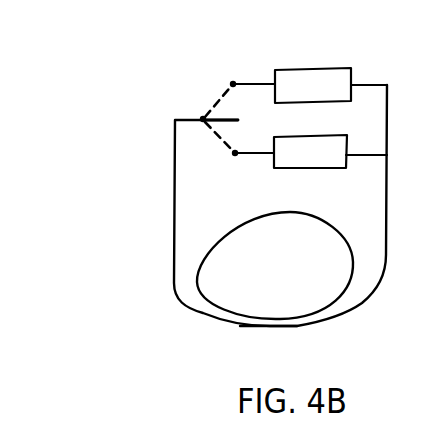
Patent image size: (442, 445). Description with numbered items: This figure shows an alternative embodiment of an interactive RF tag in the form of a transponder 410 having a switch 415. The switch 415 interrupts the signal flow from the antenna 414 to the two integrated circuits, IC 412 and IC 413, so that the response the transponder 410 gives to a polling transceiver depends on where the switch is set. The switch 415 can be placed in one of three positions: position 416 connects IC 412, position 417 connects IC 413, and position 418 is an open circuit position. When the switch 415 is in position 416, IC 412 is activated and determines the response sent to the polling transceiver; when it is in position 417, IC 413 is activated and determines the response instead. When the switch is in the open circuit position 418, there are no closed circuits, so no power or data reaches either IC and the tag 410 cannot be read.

The transponder 410 is at (136, 196).
The IC 412 is at (333, 77).
The IC 413 is at (324, 160).
The antenna 414 is at (296, 325).
The switch 415 is at (195, 109).
The position 416 is at (218, 102).
The position 417 is at (219, 137).
The open circuit position 418 is at (213, 113).